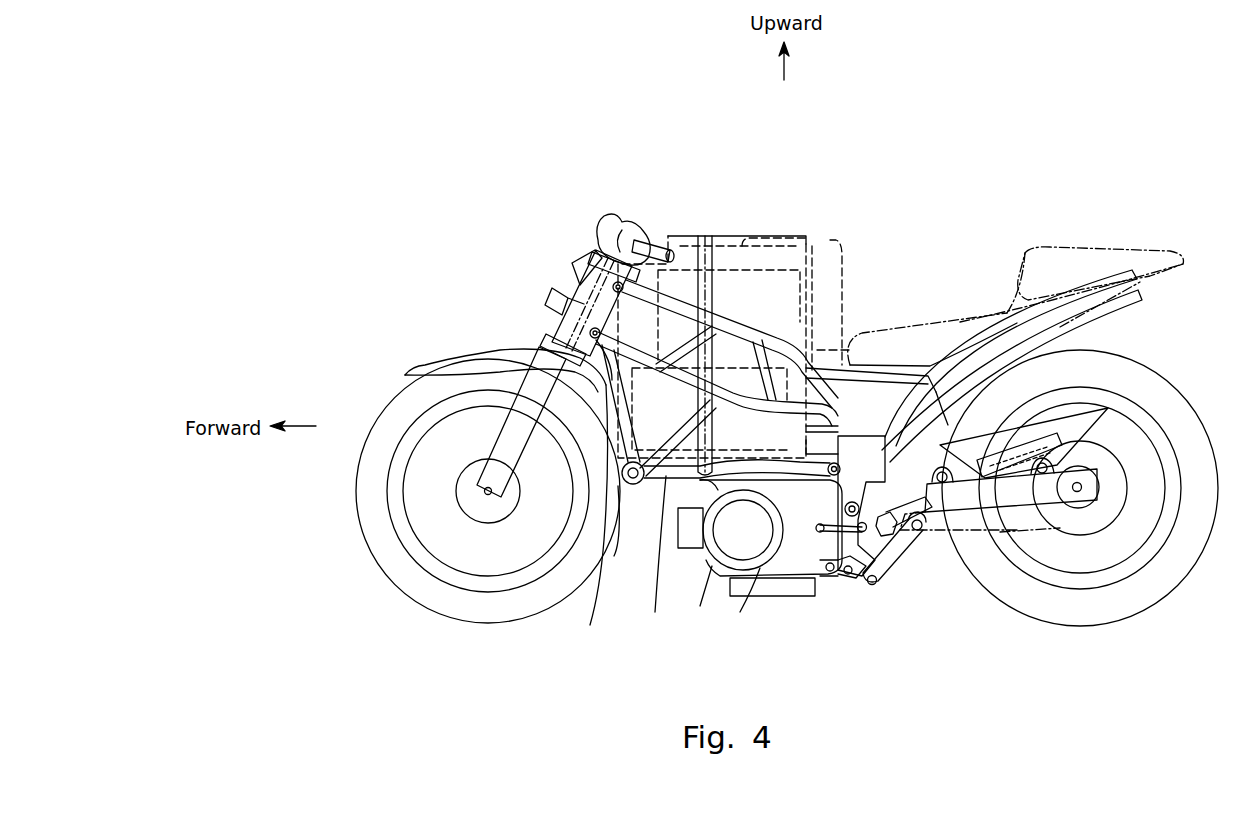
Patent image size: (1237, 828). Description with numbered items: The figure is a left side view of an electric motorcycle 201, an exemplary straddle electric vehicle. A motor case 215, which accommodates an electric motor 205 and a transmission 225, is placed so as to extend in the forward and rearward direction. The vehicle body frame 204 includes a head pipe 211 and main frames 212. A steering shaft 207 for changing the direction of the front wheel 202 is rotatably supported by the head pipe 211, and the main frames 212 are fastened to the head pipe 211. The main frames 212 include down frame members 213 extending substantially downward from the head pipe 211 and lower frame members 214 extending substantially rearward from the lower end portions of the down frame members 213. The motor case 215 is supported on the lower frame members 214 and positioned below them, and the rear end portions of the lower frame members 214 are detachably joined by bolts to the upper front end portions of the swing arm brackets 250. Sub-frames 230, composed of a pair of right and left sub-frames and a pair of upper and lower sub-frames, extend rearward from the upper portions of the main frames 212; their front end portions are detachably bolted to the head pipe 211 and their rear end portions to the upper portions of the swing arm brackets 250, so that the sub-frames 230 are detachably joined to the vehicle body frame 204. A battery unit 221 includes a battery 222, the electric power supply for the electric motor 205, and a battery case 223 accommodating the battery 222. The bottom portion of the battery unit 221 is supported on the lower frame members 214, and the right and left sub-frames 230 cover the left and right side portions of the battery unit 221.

The electric motorcycle 201 is at (1130, 162).
The front wheel 202 is at (417, 598).
The vehicle body frame 204 is at (545, 342).
The electric motor 205 is at (720, 560).
The steering shaft 207 is at (592, 234).
The head pipe 211 is at (586, 322).
The main frames 212 is at (678, 656).
The down frame members 213 is at (622, 482).
The lower frame members 214 is at (665, 482).
The motor case 215 is at (750, 597).
The battery unit 221 is at (803, 242).
The battery 222 is at (858, 250).
The battery case 223 is at (838, 312).
The transmission 225 is at (794, 576).
The sub-frames 230 is at (692, 250).
The swing arm brackets 250 is at (860, 582).